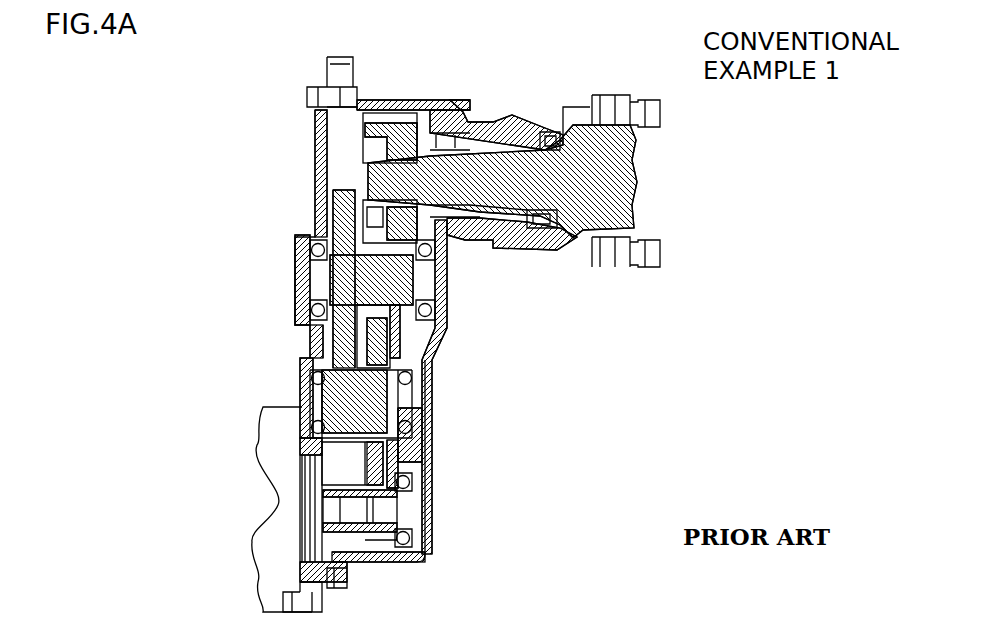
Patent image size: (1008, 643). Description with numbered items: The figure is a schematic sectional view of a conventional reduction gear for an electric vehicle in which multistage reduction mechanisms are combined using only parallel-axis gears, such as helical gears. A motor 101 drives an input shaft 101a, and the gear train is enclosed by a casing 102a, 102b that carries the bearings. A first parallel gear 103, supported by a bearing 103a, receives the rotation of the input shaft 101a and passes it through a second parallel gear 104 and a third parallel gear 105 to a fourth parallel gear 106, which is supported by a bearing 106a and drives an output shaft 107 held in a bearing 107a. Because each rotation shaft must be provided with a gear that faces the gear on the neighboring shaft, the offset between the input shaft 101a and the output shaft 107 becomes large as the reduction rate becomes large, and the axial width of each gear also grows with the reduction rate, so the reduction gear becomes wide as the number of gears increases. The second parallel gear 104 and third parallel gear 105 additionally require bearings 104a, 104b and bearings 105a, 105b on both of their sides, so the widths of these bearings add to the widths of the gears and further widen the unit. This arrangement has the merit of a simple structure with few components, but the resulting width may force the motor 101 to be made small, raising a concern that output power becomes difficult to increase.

The motor 101 is at (268, 443).
The input shaft 101a is at (395, 510).
The casing 102a is at (315, 150).
The casing 102b is at (482, 122).
The first parallel gear 103 is at (412, 485).
The bearing 103a is at (412, 540).
The second parallel gear 104 is at (412, 405).
The bearing 104a is at (412, 374).
The bearing 104b is at (311, 378).
The third parallel gear 105 is at (345, 281).
The bearing 105a is at (432, 307).
The bearing 105b is at (311, 250).
The fourth parallel gear 106 is at (393, 125).
The bearing 106a is at (448, 265).
The output shaft 107 is at (618, 178).
The bearing 107a is at (550, 128).